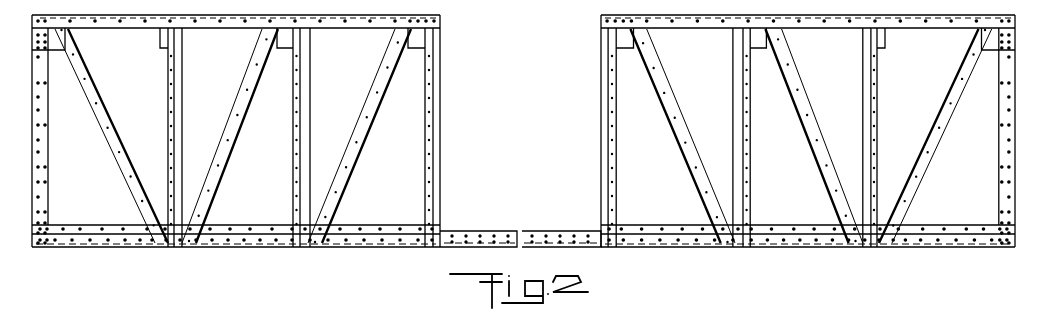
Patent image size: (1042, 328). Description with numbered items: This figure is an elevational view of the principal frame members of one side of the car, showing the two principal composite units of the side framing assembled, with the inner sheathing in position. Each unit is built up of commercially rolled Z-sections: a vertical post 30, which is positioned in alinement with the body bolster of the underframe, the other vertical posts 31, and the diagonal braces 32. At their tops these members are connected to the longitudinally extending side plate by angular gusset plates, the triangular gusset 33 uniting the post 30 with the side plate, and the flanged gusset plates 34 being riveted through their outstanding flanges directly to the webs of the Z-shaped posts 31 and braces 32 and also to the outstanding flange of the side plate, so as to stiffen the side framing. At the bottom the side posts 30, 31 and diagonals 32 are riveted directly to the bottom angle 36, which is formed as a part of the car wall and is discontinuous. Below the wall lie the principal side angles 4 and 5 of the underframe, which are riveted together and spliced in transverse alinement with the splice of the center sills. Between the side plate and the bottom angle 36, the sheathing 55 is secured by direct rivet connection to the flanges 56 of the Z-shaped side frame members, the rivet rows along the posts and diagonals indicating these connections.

The principal side angle 4 is at (349, 236).
The principal side angle 5 is at (109, 237).
The vertical post 30 is at (183, 127).
The vertical post 31 is at (305, 131).
The diagonal brace 32 is at (109, 129).
The triangular gusset plate 33 is at (237, 9).
The flanged gusset plate 34 is at (297, 39).
The bottom angle 36 is at (259, 245).
The sheathing 55 is at (32, 95).
The flange 56 is at (119, 171).